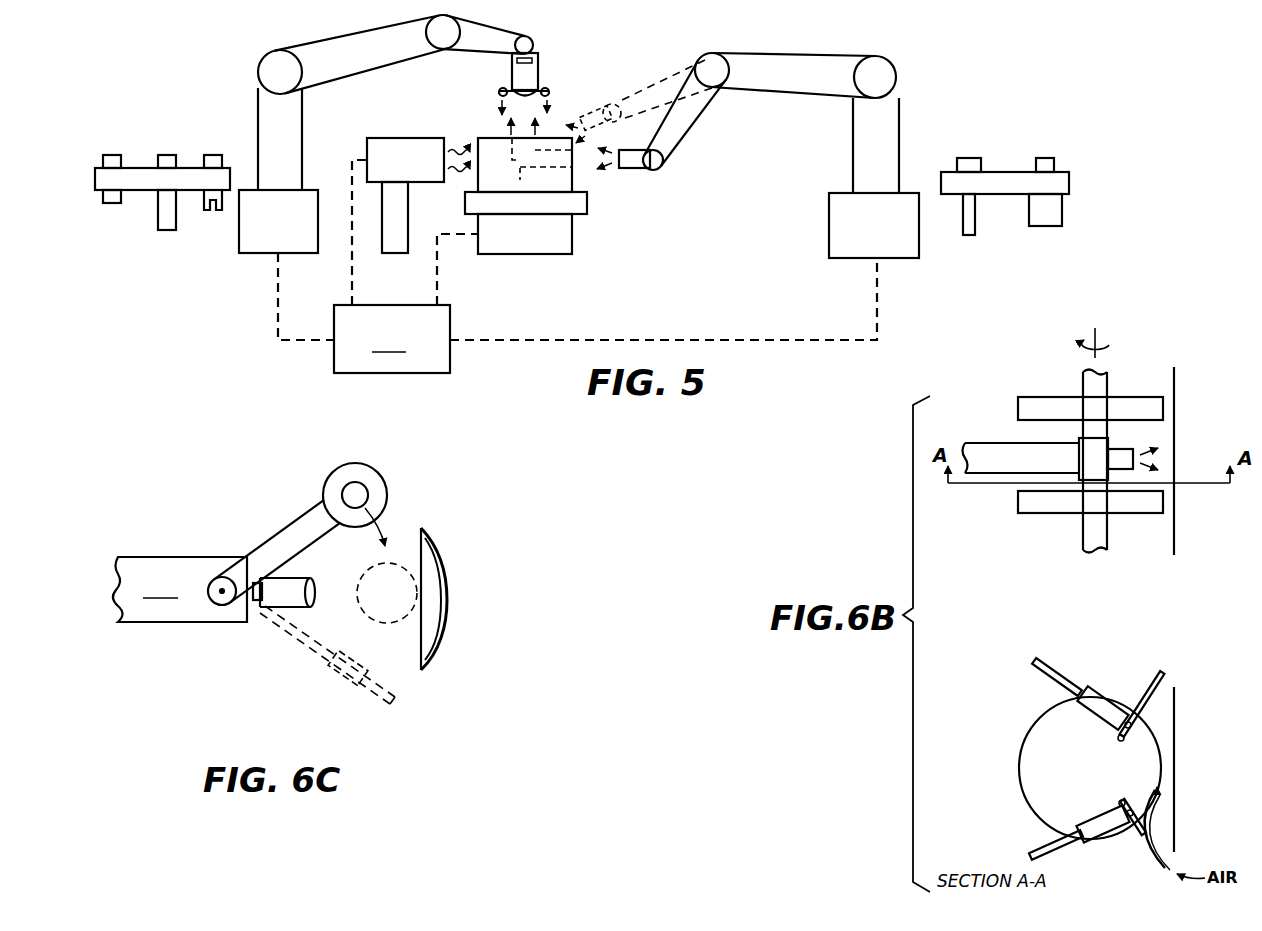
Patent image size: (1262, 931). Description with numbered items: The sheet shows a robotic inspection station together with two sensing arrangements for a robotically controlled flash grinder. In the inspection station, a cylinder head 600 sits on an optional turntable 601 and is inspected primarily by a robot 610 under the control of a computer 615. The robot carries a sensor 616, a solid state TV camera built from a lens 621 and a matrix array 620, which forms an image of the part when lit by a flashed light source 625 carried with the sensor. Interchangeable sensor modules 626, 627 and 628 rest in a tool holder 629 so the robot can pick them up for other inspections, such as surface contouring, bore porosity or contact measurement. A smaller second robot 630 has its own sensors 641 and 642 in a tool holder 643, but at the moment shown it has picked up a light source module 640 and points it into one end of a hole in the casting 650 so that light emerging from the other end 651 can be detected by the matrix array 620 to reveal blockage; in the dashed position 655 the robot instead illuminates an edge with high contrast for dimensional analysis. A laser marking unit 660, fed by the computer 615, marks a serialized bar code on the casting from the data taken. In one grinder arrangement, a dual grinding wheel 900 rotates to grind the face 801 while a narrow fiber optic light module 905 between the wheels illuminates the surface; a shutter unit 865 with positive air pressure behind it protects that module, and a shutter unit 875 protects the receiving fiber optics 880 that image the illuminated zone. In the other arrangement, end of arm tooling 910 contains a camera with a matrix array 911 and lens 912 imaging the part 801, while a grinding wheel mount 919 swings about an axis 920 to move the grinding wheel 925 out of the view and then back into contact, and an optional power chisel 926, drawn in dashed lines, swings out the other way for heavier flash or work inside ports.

In FIG. 5, the robot 610 is at (272, 62).
In FIG. 5, the computer 615 is at (577, 266).
In FIG. 5, the sensor 616 is at (512, 59).
In FIG. 5, the matrix array 620 is at (540, 56).
In FIG. 5, the lens 621 is at (541, 86).
In FIG. 5, the flashed light source 625 is at (550, 92).
In FIG. 5, the sensor module 626 is at (112, 155).
In FIG. 5, the sensor module 627 is at (167, 155).
In FIG. 5, the sensor module 628 is at (213, 155).
In FIG. 5, the tool holder 629 is at (95, 180).
In FIG. 5, the second robot 630 is at (893, 62).
In FIG. 5, the light source module 640 is at (650, 170).
In FIG. 5, the sensor 641 is at (970, 158).
In FIG. 5, the sensor 642 is at (1054, 160).
In FIG. 5, the tool holder 643 is at (1069, 183).
In FIG. 5, the casting 650 is at (525, 165).
In FIG. 5, the other end of hole 651 is at (508, 128).
In FIG. 5, the position 655 is at (639, 90).
In FIG. 5, the laser marking unit 660 is at (382, 138).
In FIG. 5, the cylinder head 600 is at (560, 196).
In FIG. 5, the turntable 601 is at (587, 208).
In FIG. 6B, the face 801 is at (1175, 460).
In FIG. 6C, the face 801 is at (436, 573).
In FIG. 6C, the end of arm tooling 910 is at (180, 589).
In FIG. 6C, the matrix array 911 is at (262, 606).
In FIG. 6C, the lens 912 is at (310, 602).
In FIG. 6C, the grinding wheel mount 919 is at (292, 520).
In FIG. 6C, the axis 920 is at (218, 588).
In FIG. 6C, the grinding wheel 925 is at (385, 490).
In FIG. 6C, the power chisel 926 is at (348, 688).
In FIG. 6B, the dual grinding wheel 900 is at (1133, 397).
In FIG. 6B, the receiving fiber optics 880 is at (1093, 690).
In FIG. 6B, the shutter unit 875 is at (1135, 700).
In FIG. 6B, the fiber optic light module 905 is at (1100, 836).
In FIG. 6B, the shutter unit 865 is at (1143, 822).